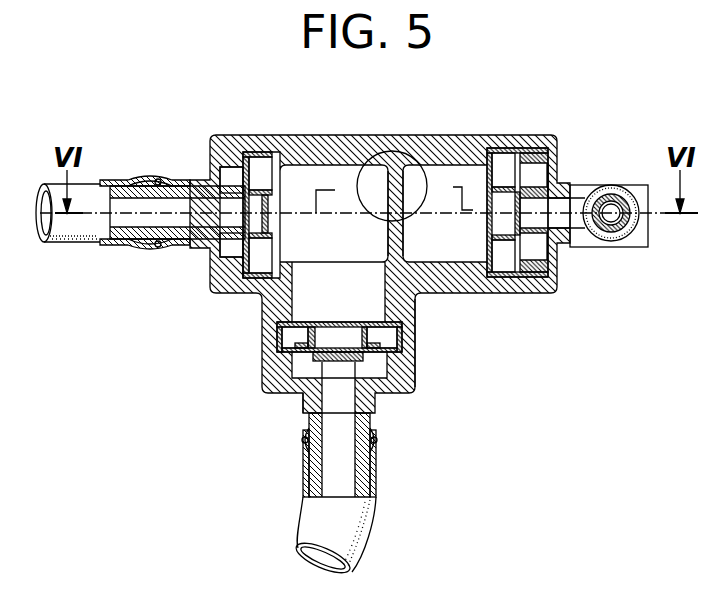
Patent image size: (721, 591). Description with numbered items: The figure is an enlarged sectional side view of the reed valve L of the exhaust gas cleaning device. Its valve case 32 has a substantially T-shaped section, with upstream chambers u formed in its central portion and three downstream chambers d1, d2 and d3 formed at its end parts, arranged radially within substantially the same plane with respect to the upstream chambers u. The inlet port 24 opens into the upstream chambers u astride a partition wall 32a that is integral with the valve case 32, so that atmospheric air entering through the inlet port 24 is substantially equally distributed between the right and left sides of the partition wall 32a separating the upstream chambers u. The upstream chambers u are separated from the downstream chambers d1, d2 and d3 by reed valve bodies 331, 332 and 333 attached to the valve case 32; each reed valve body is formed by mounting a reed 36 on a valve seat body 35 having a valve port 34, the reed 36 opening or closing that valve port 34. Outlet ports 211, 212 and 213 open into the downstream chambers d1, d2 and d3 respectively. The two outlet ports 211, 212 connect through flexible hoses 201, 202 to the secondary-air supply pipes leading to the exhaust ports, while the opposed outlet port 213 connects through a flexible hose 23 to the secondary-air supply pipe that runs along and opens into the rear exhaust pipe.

The valve case 32 is at (319, 135).
The partition wall 32a is at (397, 242).
The upstream chambers u is at (346, 172).
The inlet port 24 is at (375, 207).
The reed valve body 332 is at (262, 283).
The reed valve body 333 is at (506, 148).
The reed valve body 331 is at (412, 338).
The valve port 34 is at (265, 229).
The valve seat body 35 is at (252, 172).
The reed 36 is at (213, 253).
The outlet port 212 is at (170, 187).
The outlet port 211 is at (355, 423).
The outlet port 213 is at (600, 193).
The flexible hose 202 is at (77, 238).
The flexible hose 201 is at (363, 528).
The flexible hose 23 is at (637, 247).
The downstream chamber d1 is at (303, 373).
The downstream chamber d2 is at (233, 258).
The downstream chamber d3 is at (537, 183).
The reed valve L is at (435, 345).